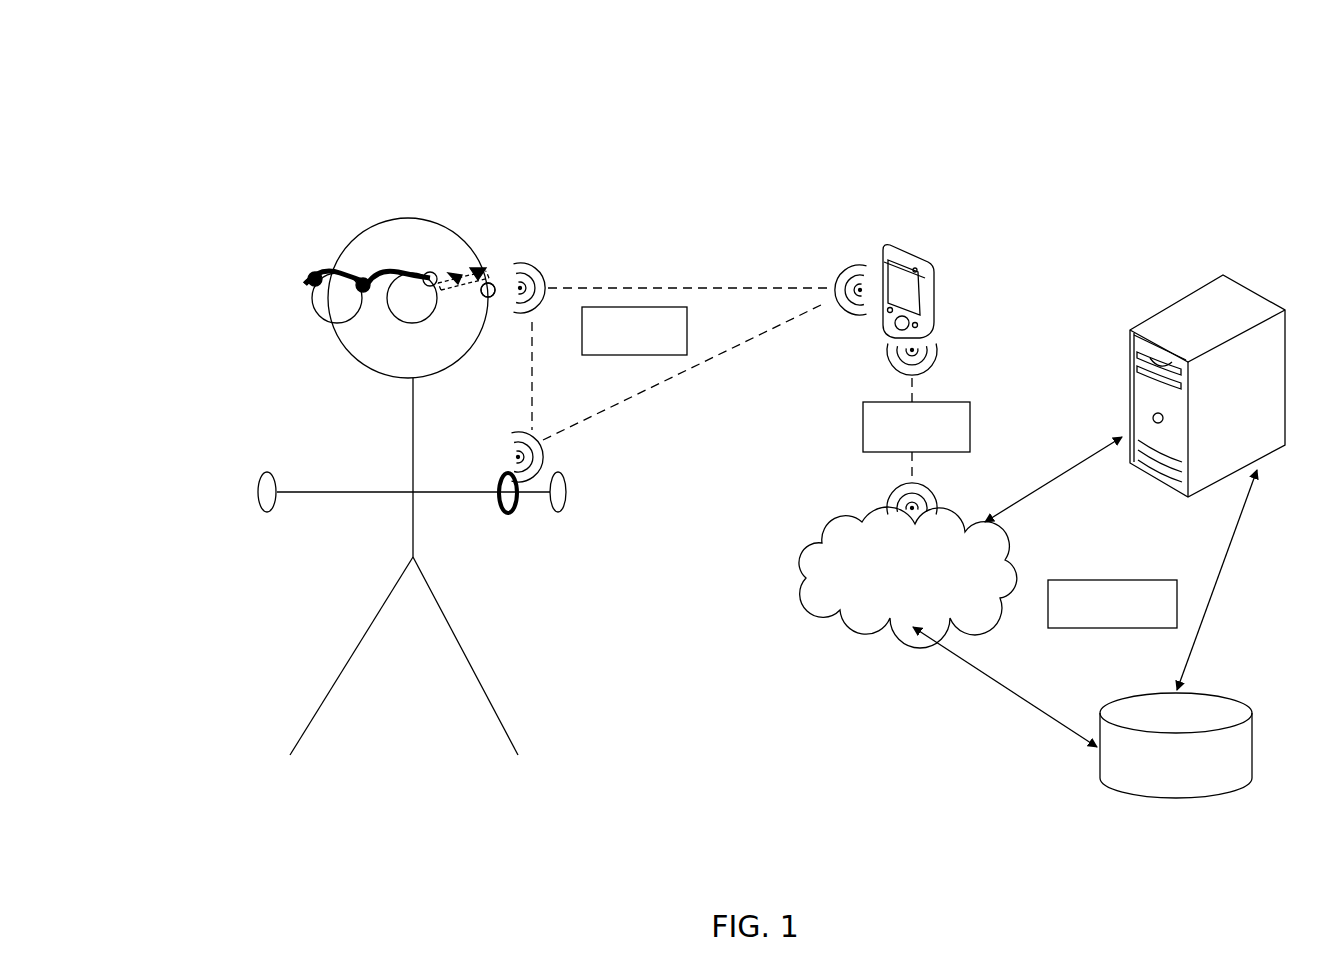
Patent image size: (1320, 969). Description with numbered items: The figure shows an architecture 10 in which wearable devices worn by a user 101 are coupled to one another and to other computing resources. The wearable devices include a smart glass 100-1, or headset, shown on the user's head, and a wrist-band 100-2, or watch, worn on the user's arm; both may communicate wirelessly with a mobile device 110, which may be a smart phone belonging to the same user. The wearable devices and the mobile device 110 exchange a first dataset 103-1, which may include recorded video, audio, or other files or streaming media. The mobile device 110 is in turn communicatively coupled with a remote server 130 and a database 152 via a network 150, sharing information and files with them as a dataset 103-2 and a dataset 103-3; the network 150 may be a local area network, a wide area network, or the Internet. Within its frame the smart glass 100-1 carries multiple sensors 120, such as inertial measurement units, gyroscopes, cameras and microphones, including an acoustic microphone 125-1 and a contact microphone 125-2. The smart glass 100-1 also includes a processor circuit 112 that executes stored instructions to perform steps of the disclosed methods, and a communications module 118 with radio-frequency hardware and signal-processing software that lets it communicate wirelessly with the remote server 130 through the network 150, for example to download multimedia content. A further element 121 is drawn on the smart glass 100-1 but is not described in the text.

The architecture 10 is at (1045, 92).
The user 101 is at (328, 693).
The smart glass 100-1 is at (415, 312).
The wrist-band 100-2 is at (502, 518).
The acoustic microphone 125-1 is at (310, 283).
The contact microphone 125-2 is at (365, 278).
The sensor 121 is at (424, 274).
The processor circuit 112 is at (445, 274).
The sensors 120 is at (483, 277).
The communications module 118 is at (490, 297).
The first dataset 103-1 is at (604, 349).
The dataset 103-2 is at (886, 444).
The dataset 103-3 is at (1082, 618).
The mobile device 110 is at (937, 268).
The remote server 130 is at (1213, 410).
The network 150 is at (886, 603).
The database 152 is at (1158, 727).